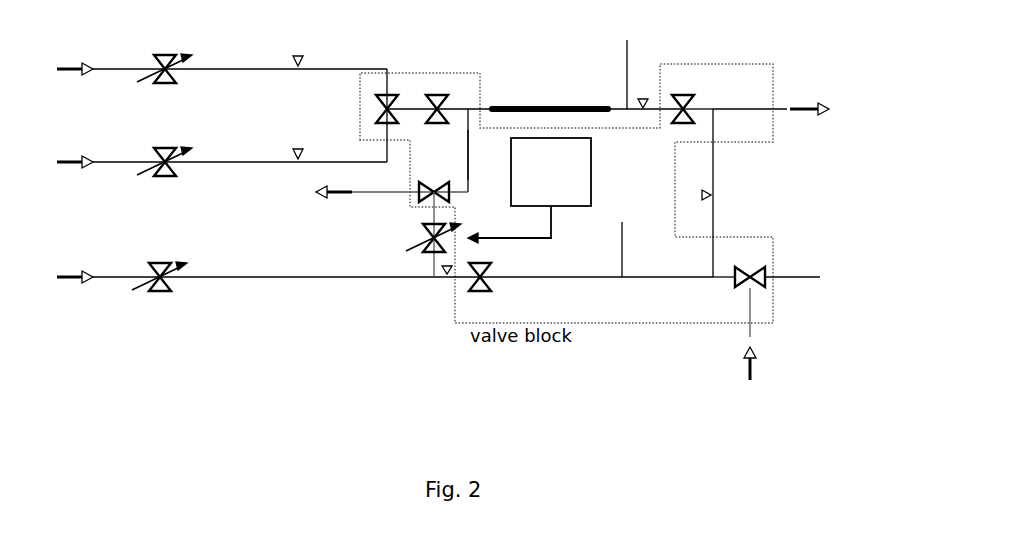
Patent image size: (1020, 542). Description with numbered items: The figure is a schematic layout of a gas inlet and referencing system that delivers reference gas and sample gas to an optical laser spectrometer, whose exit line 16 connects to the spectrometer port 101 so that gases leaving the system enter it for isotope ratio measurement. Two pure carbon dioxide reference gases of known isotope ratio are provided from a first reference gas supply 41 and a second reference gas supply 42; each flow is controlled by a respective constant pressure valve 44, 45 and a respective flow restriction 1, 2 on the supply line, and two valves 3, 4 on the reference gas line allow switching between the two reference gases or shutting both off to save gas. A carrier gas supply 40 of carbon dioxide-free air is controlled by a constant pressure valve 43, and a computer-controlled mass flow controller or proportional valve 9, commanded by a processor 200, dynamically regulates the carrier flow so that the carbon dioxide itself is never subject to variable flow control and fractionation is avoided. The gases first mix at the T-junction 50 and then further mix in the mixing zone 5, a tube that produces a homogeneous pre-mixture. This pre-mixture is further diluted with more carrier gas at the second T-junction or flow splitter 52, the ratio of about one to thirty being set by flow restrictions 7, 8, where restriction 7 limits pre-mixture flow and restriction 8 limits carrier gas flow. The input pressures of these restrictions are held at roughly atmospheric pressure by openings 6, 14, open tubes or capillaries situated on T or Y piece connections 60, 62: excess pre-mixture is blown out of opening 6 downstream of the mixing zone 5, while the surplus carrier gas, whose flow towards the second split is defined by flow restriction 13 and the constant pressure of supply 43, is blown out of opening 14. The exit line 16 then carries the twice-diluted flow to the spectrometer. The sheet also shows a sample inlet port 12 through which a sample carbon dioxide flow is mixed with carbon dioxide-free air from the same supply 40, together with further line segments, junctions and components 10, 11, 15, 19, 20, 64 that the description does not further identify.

The flow restriction 1 is at (306, 54).
The flow restriction 2 is at (307, 147).
The valve V1 3 is at (396, 115).
The valve V2 4 is at (439, 99).
The mixing zone 5 is at (550, 96).
The opening 6 is at (617, 74).
The flow restriction 7 is at (646, 92).
The flow restriction 8 is at (717, 193).
The mass flow controller or proportional valve 9 is at (402, 234).
The carrier out line 10 is at (392, 184).
The connecting line 11 is at (477, 155).
The sample inlet port 12 is at (794, 312).
The flow restriction 13 is at (449, 290).
The opening 14 is at (606, 249).
The line segment 15 is at (667, 290).
The exit line 16 is at (750, 93).
The pressure sensor 19 is at (436, 264).
The sample line 20 is at (799, 263).
The carrier gas supply 40 is at (92, 275).
The first reference gas supply 41 is at (97, 69).
The second reference gas supply 42 is at (97, 162).
The constant pressure valve 43 is at (263, 276).
The constant pressure valve 44 is at (240, 66).
The constant pressure valve 45 is at (240, 159).
The T-junction 50 is at (474, 138).
The second T-junction or flow splitter 52 is at (702, 96).
The T or Y piece connection 60 is at (645, 118).
The T or Y piece connection 62 is at (552, 273).
The junction 64 is at (716, 290).
The port 101 is at (847, 136).
The processor 200 is at (525, 190).